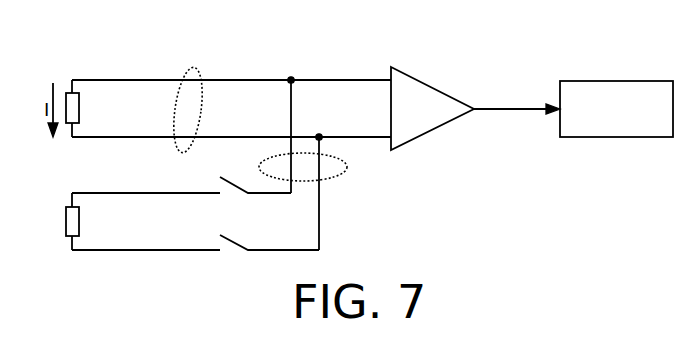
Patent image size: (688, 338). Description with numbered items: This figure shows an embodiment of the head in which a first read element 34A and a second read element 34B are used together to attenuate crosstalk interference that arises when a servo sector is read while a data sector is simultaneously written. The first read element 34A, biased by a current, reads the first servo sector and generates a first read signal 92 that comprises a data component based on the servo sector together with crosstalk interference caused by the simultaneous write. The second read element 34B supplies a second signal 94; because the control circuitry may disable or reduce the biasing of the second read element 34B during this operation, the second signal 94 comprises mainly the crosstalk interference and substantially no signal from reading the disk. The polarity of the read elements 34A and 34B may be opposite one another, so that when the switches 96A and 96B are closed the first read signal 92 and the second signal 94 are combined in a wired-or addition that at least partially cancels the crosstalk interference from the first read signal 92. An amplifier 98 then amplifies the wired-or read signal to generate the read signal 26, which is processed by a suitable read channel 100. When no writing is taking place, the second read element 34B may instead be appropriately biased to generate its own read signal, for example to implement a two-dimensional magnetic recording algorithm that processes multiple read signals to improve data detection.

The first read signal 92 is at (193, 68).
The first read element 34A is at (70, 97).
The second read element 34B is at (70, 230).
The second signal 94 is at (345, 172).
The switch 96A is at (228, 198).
The switch 96B is at (230, 253).
The amplifier 98 is at (431, 82).
The read signal 26 is at (512, 110).
The read channel 100 is at (617, 81).